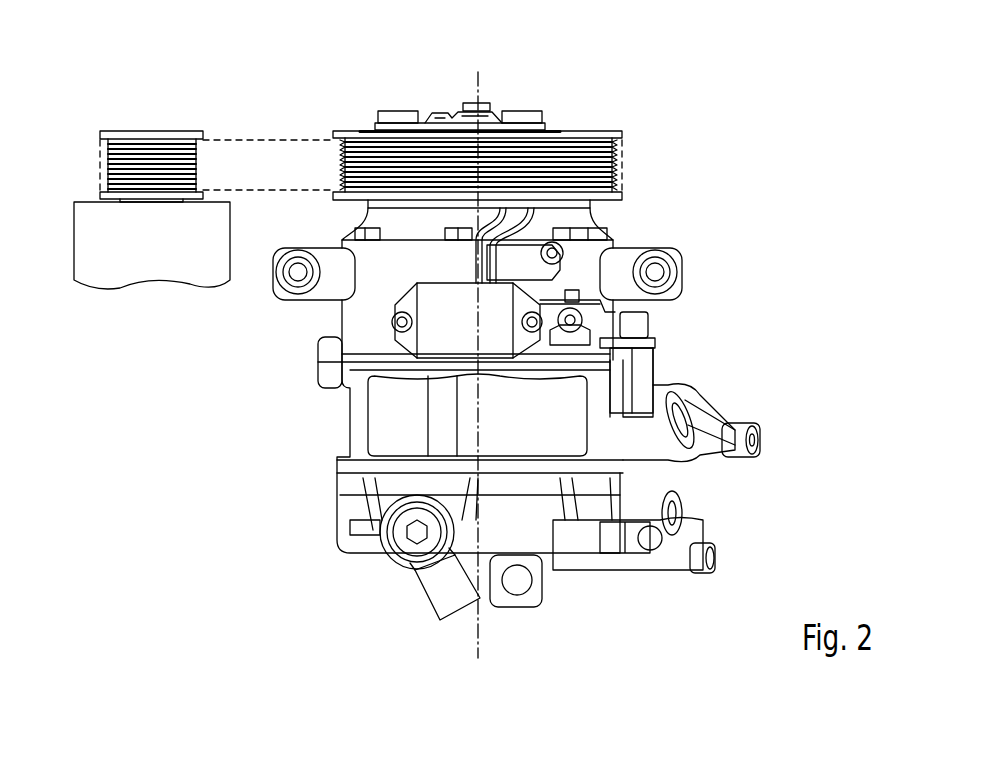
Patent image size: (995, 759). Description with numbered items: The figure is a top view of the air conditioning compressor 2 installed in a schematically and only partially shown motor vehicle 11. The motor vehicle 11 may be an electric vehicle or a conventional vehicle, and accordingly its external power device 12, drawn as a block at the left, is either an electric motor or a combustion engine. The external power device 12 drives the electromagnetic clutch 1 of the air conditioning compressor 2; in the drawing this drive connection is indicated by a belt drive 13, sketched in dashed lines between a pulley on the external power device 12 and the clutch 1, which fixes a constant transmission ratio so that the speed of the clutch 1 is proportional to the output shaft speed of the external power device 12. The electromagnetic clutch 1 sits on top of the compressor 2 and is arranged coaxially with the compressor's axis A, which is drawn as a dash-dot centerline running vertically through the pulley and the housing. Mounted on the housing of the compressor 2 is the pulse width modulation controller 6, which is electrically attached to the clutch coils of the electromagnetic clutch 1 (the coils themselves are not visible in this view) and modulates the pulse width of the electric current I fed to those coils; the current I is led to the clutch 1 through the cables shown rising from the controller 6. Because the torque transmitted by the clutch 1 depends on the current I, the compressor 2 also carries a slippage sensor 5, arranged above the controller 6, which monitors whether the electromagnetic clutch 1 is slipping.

The electromagnetic clutch 1 is at (566, 128).
The air conditioning compressor 2 is at (686, 157).
The slippage sensor 5 is at (521, 272).
The pulse width modulation controller 6 is at (460, 331).
The motor vehicle 11 is at (853, 143).
The external power device 12 is at (164, 256).
The belt drive 13 is at (247, 162).
The electric current I is at (513, 229).
The axis A is at (478, 645).